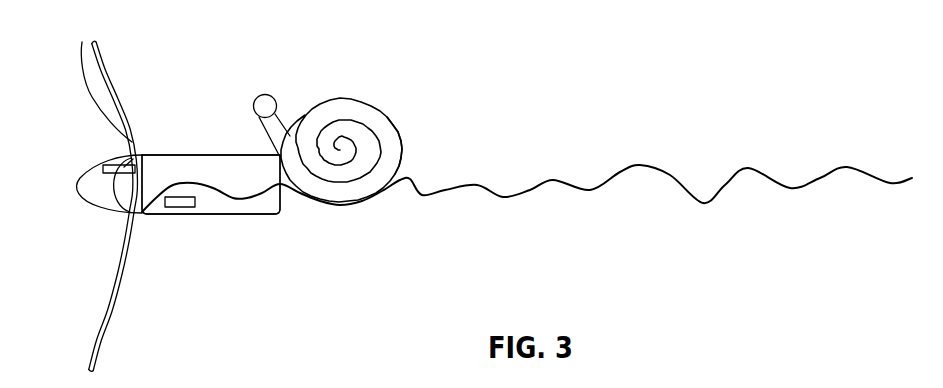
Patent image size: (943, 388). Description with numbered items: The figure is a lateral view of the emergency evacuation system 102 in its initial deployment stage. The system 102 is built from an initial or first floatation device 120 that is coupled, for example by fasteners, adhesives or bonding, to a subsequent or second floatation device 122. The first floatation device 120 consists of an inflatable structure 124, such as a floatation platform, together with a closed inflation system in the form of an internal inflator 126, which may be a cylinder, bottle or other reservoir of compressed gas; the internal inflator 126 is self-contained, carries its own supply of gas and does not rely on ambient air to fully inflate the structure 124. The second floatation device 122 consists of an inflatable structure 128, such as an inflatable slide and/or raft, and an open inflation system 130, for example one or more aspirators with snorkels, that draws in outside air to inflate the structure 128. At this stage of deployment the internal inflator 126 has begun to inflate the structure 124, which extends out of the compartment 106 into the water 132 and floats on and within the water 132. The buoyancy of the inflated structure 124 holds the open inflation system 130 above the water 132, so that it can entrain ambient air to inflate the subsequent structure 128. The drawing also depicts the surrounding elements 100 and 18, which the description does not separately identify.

The elongated strand / strap 18 is at (108, 357).
The leaf-shaped attachment 100 is at (100, 80).
The emergency evacuation system 102 is at (393, 76).
The compartment 106 is at (100, 192).
The first floatation device 120 is at (203, 154).
The second floatation device 122 is at (402, 133).
The inflatable structure 124 is at (240, 215).
The internal inflator 126 is at (178, 208).
The inflatable structure 128 is at (340, 110).
The open inflation system 130 is at (268, 95).
The water 132 is at (658, 170).